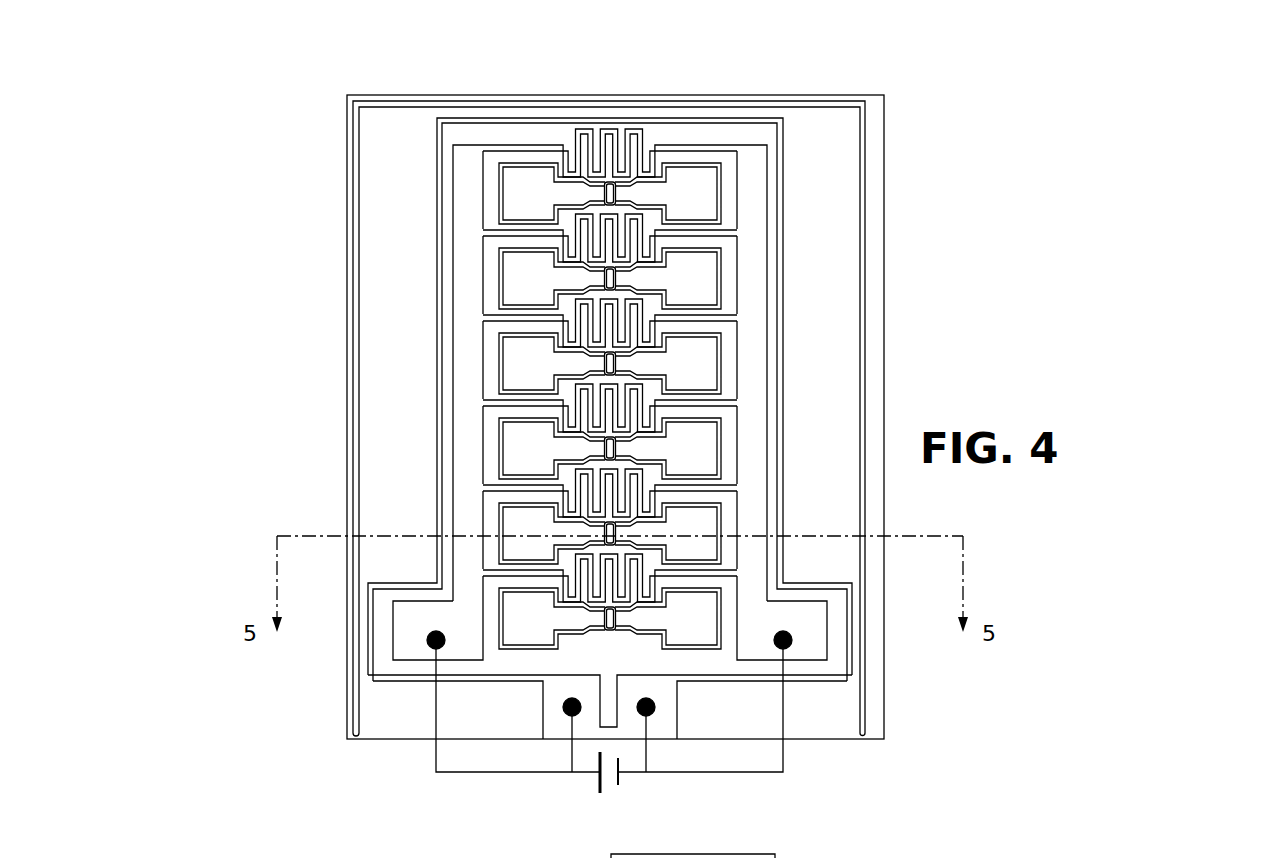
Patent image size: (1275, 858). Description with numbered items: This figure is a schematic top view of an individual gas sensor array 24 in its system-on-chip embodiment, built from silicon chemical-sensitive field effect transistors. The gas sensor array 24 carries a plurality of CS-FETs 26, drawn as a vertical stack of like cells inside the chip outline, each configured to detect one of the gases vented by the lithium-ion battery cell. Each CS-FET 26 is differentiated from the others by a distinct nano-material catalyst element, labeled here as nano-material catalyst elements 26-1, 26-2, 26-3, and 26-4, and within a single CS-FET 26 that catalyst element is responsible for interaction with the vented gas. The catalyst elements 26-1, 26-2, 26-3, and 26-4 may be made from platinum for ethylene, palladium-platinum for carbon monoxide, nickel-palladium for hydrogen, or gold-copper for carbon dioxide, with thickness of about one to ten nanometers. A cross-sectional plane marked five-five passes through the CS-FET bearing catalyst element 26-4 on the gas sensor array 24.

The gas sensor array 24 is at (905, 137).
The chemical-sensitive field effect transistor 26 is at (728, 369).
The nano-material catalyst element 26-1 is at (605, 280).
The nano-material catalyst element 26-2 is at (605, 365).
The nano-material catalyst element 26-3 is at (605, 449).
The nano-material catalyst element 26-4 is at (605, 533).